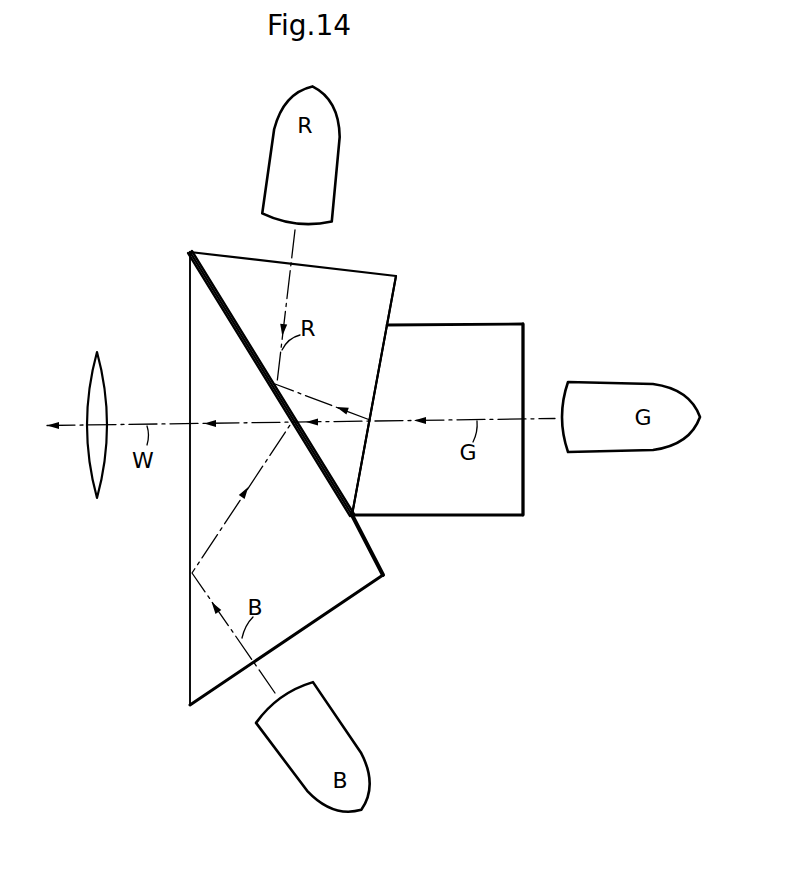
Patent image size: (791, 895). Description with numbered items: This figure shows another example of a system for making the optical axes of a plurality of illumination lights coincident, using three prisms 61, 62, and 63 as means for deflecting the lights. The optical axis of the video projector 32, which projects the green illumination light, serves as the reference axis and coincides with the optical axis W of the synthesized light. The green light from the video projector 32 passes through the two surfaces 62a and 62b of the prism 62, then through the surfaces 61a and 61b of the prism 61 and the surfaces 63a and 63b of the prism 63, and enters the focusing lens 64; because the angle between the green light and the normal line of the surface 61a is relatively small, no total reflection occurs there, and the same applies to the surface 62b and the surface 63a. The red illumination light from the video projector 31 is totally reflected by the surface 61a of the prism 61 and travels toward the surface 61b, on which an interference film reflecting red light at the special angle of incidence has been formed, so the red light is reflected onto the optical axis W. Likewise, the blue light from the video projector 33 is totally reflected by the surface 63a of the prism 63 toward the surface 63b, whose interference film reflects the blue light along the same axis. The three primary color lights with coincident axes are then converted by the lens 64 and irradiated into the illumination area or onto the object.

The video projector 31 is at (338, 113).
The video projector 32 is at (617, 380).
The video projector 33 is at (352, 738).
The prism 61 is at (360, 480).
The surface of prism 61 61a is at (208, 272).
The surface of prism 61 61b is at (386, 340).
The prism 62 is at (503, 500).
The surface of prism 62 62a is at (523, 350).
The surface of prism 62 62b is at (383, 362).
The prism 63 is at (385, 575).
The surface of prism 63 63a is at (190, 500).
The surface of prism 63 63b is at (352, 528).
The focusing lens 64 is at (97, 352).